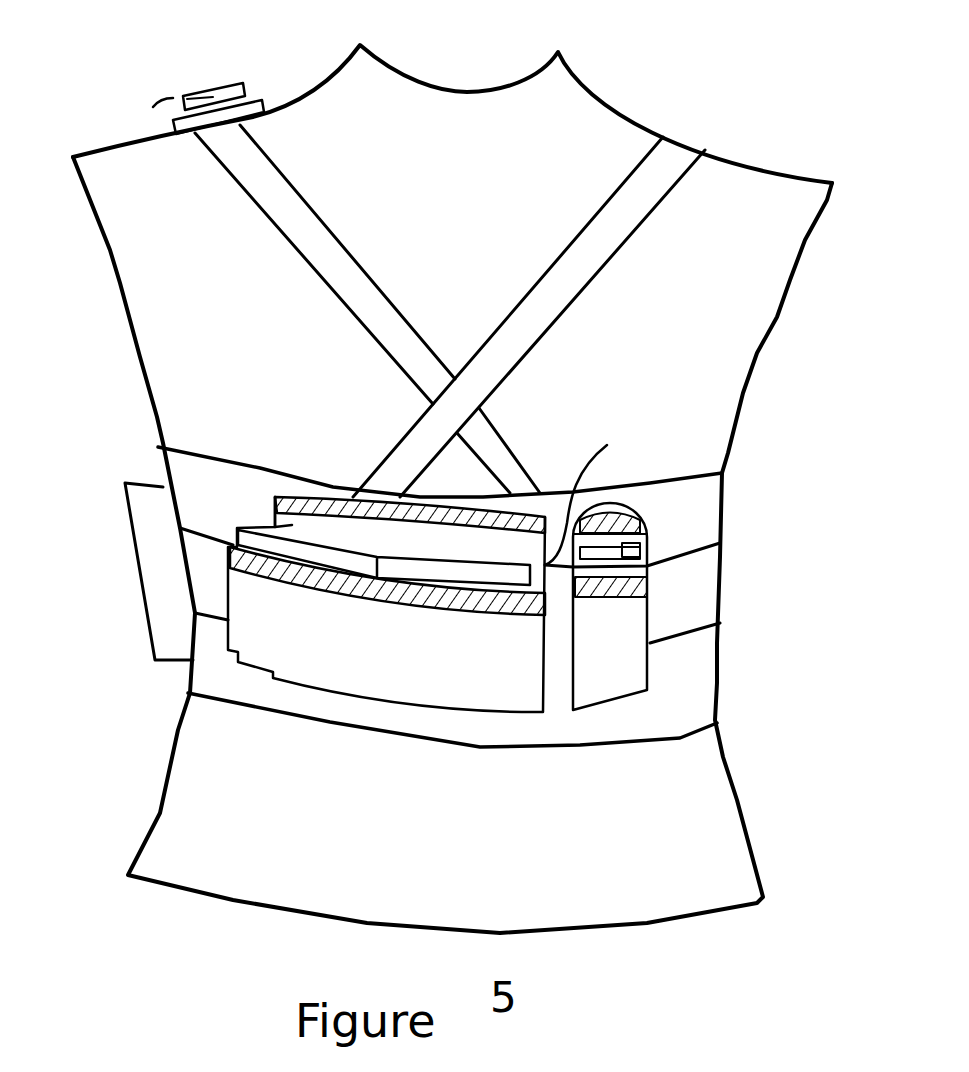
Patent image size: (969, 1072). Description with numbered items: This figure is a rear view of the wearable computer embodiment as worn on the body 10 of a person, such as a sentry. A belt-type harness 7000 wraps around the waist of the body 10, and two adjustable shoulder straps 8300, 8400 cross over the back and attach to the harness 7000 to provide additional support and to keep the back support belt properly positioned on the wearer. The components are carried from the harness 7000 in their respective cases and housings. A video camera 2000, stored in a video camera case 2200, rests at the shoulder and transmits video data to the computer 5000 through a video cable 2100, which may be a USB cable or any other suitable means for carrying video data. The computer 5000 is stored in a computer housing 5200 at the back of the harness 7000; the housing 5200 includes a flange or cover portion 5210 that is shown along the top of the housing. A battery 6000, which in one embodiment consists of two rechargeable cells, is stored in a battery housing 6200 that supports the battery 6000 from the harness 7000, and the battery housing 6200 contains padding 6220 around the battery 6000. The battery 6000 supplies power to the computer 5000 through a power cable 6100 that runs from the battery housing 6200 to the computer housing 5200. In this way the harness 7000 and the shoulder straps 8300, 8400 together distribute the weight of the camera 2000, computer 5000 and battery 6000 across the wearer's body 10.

The body 10 is at (737, 316).
The video camera 2000 is at (200, 91).
The video cable 2100 is at (172, 98).
The video camera case 2200 is at (163, 595).
The computer 5000 is at (455, 580).
The computer housing 5200 is at (367, 685).
The housing flange 5210 is at (290, 525).
The battery 6000 is at (647, 530).
The power cable 6100 is at (607, 445).
The battery housing 6200 is at (605, 692).
The pocket padding 6220 is at (613, 598).
The harness 7000 is at (722, 520).
The shoulder strap 8300 is at (283, 187).
The shoulder strap 8400 is at (608, 262).